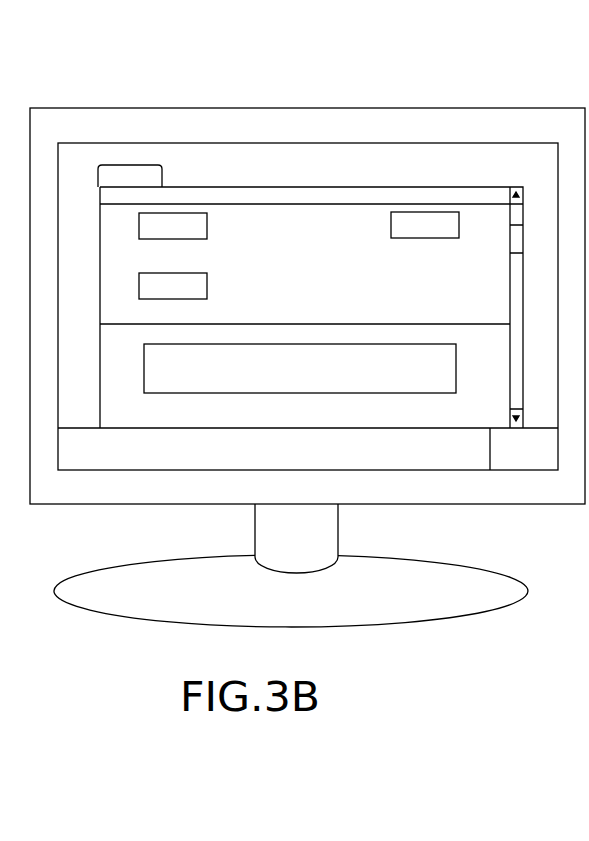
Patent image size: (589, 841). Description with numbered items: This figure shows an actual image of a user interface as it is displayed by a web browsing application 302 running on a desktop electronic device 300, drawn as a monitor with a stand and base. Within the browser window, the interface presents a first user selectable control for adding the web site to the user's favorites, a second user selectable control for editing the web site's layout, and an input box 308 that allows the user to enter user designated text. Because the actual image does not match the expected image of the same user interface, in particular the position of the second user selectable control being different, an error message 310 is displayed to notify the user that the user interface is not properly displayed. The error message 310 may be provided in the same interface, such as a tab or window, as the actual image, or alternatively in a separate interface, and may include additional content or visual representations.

The desktop electronic device 300 is at (253, 108).
The web browsing application 302 is at (114, 165).
The input box 308 is at (425, 212).
The error message 310 is at (211, 393).